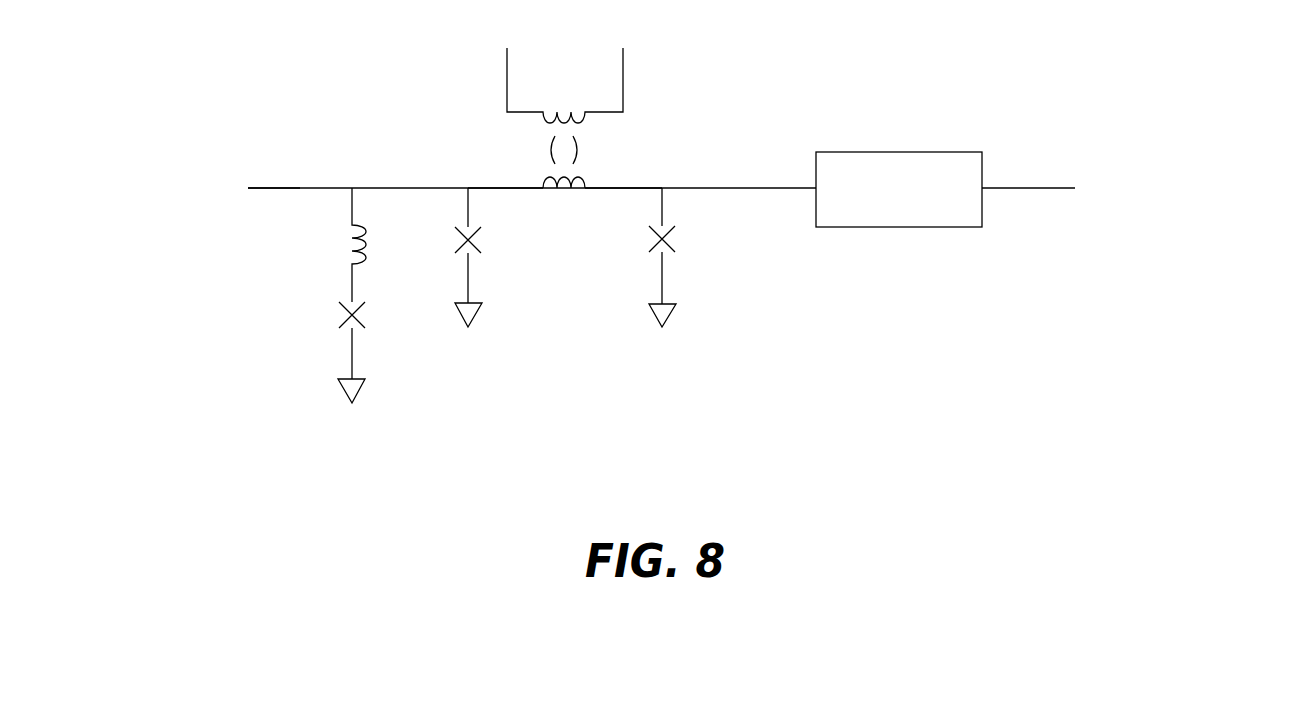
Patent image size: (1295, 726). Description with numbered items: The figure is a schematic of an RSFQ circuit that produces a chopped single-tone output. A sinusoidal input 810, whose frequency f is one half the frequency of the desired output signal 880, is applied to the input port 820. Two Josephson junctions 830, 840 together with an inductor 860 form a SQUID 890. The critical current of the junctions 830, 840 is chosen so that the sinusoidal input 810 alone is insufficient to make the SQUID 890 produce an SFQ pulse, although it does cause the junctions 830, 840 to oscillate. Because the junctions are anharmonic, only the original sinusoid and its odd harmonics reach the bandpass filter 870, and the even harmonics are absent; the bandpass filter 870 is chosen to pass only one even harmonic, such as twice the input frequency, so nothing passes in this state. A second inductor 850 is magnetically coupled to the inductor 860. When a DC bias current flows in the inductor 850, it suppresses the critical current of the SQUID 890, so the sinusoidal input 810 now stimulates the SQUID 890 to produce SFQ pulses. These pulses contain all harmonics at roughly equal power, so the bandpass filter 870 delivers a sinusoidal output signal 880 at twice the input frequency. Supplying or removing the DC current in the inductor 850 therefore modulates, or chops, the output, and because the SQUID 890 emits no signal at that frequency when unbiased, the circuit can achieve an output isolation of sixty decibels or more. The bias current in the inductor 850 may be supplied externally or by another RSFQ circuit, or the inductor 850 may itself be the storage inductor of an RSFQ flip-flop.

The sinusoidal input 810 is at (161, 189).
The input port 820 is at (288, 175).
The Josephson junction 830 is at (480, 265).
The Josephson junction 840 is at (677, 267).
The inductor 850 is at (587, 98).
The inductor 860 is at (598, 175).
The bandpass filter 870 is at (908, 137).
The output signal 880 is at (1126, 189).
The SQUID 890 is at (572, 253).